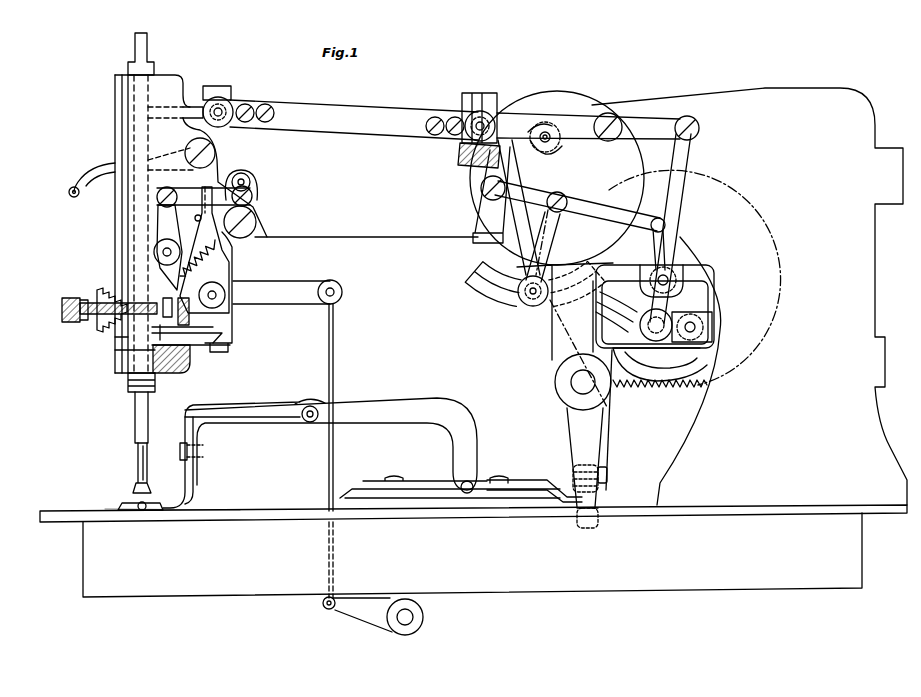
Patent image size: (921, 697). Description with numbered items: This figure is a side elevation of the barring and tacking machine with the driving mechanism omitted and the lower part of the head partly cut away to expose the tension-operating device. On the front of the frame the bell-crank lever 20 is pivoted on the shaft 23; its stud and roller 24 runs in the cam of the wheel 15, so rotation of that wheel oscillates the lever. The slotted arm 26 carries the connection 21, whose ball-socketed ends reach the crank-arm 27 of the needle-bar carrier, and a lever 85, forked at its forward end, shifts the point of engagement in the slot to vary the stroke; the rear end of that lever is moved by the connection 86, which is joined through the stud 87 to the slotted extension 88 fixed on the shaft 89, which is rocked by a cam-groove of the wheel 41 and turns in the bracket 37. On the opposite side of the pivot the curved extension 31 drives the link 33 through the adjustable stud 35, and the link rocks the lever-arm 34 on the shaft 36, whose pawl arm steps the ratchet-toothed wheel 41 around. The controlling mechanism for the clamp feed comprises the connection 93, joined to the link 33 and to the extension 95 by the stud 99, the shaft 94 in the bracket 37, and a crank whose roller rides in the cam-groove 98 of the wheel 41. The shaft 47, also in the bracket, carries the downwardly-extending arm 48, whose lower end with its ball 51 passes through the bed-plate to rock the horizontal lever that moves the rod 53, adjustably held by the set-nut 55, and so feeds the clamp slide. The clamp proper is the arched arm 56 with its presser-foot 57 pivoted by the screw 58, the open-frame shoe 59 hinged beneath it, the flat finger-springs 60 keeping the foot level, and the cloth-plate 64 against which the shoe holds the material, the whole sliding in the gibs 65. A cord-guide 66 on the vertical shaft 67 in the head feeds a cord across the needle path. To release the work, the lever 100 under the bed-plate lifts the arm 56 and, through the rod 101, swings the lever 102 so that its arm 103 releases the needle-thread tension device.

The wheel 15 is at (553, 150).
The bell-crank lever 20 is at (523, 150).
The connection 21 is at (352, 118).
The shaft 23 is at (462, 158).
The stud and roller 24 is at (555, 141).
The arm 26 is at (470, 97).
The crank-arm 27 is at (190, 107).
The extension 31 is at (477, 213).
The link 33 is at (580, 206).
The lever-arm 34 is at (653, 247).
The stud 35 is at (481, 189).
The shaft 36 is at (676, 282).
The bracket 37 is at (567, 318).
The ratchet-toothed wheel 41 is at (778, 259).
The shaft 47 is at (571, 383).
The arm 48 is at (607, 437).
The ball 51 is at (583, 528).
The rod 53 is at (535, 492).
The set-nut 55 is at (607, 478).
The arm 56 is at (372, 412).
The presser-foot 57 is at (187, 431).
The screw 58 is at (180, 455).
The shoe 59 is at (125, 505).
The finger-springs 60 is at (240, 408).
The cloth-plate 64 is at (107, 510).
The gibs 65 is at (421, 489).
The cord-guide 66 is at (138, 458).
The vertical shaft 67 is at (160, 386).
The lever 85 is at (642, 120).
The connection 86 is at (683, 214).
The slotted arm 87 is at (641, 310).
The slotted extension 88 is at (713, 338).
The shaft 89 is at (713, 322).
The connection 93 is at (574, 216).
The shaft 94 is at (526, 302).
The extension 95 is at (479, 282).
The cam-groove 98 is at (695, 370).
The stud 99 is at (531, 298).
The lever 100 is at (378, 625).
The rod 101 is at (336, 360).
The lever 102 is at (283, 305).
The arm 103 is at (222, 267).